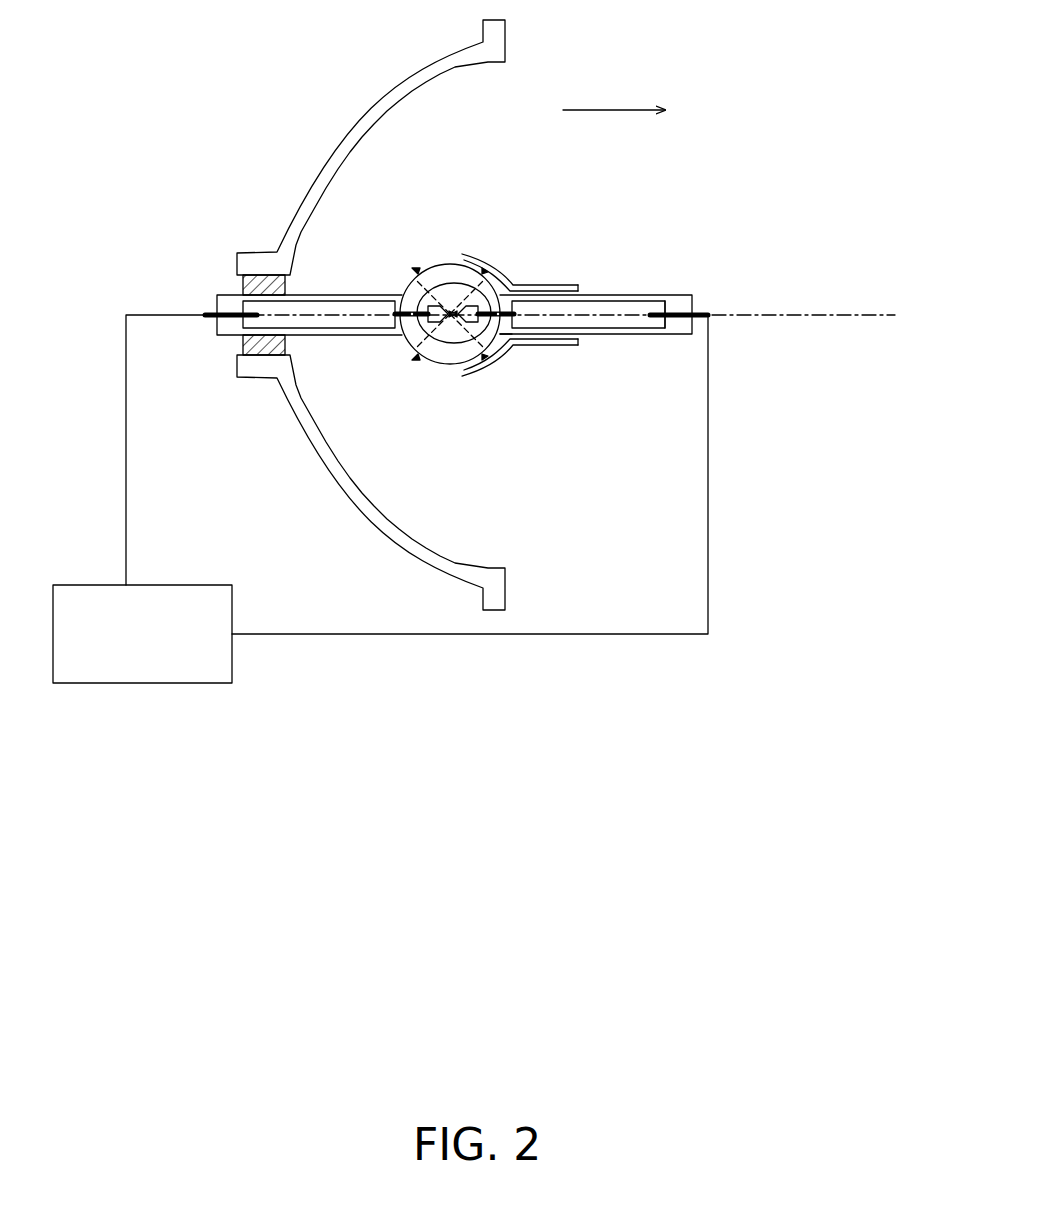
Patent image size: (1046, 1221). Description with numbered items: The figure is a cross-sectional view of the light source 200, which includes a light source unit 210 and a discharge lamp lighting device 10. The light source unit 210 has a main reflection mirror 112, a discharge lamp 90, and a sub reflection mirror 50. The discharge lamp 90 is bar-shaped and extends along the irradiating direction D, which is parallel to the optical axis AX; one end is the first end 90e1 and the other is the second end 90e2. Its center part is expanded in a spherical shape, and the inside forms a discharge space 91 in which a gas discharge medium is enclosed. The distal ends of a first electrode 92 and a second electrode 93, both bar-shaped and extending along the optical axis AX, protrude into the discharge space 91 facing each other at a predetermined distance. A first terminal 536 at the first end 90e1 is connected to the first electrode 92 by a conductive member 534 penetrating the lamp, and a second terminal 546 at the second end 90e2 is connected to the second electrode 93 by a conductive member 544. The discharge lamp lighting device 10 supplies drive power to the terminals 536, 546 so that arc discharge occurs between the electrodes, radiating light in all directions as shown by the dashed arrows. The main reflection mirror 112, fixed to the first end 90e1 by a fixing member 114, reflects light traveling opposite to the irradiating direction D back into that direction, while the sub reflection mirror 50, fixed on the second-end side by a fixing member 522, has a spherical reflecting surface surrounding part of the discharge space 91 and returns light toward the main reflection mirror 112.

The light source 200 is at (822, 53).
The light source unit 210 is at (262, 110).
The main reflection mirror 112 is at (362, 118).
The fixing member 114 is at (243, 287).
The discharge lamp 90 is at (446, 266).
The first end 90e1 is at (237, 293).
The second end 90e2 is at (666, 296).
The discharge space 91 is at (450, 345).
The first electrode 92 is at (410, 340).
The second electrode 93 is at (505, 347).
The sub reflection mirror 50 is at (480, 266).
The fixing member 522 is at (585, 293).
The conductive member 534 is at (331, 320).
The first terminal 536 is at (213, 318).
The conductive member 544 is at (603, 322).
The second terminal 546 is at (700, 323).
The discharge lamp lighting device 10 is at (172, 585).
The optical axis AX is at (818, 313).
The irradiating direction D is at (626, 112).